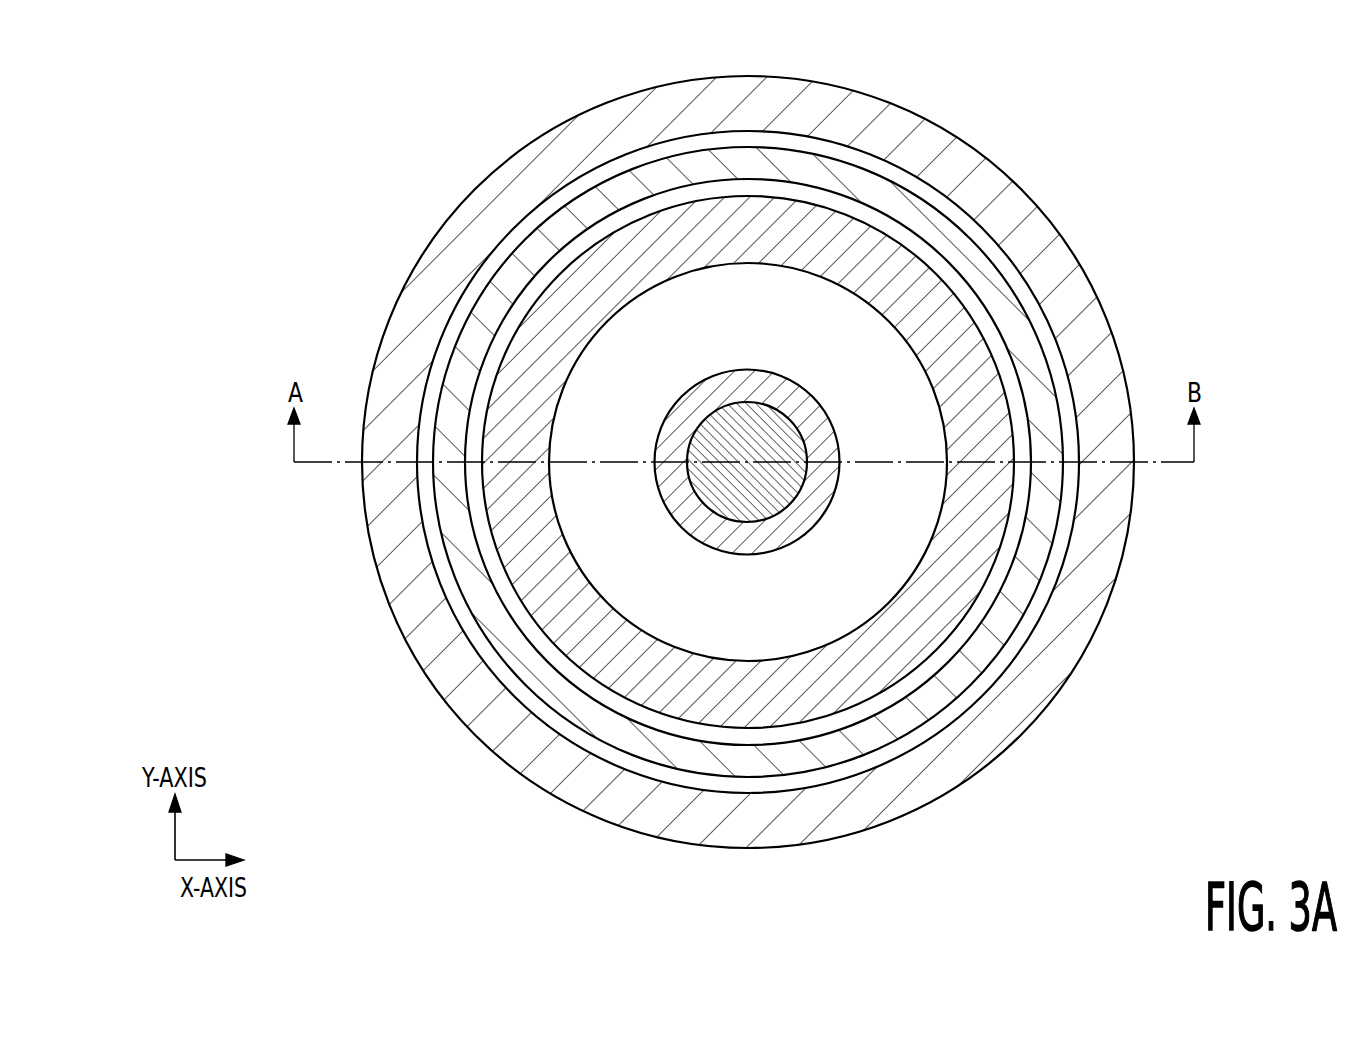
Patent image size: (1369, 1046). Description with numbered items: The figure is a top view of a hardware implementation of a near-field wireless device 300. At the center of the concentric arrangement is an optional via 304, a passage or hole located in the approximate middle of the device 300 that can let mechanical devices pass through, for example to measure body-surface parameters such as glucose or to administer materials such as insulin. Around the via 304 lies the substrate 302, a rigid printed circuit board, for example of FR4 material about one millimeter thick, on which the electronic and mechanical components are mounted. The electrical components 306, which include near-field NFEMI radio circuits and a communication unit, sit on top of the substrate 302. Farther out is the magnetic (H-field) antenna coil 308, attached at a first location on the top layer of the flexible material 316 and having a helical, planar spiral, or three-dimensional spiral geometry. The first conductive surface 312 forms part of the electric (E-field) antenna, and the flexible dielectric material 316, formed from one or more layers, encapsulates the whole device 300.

The near-field wireless device 300 is at (144, 165).
The substrate 302 is at (730, 383).
The via 304 is at (775, 485).
The electrical components 306 is at (638, 396).
The magnetic (H-field) antenna coil 308 is at (478, 335).
The first conductive surface 312 is at (388, 355).
The flexible material 316 is at (590, 270).